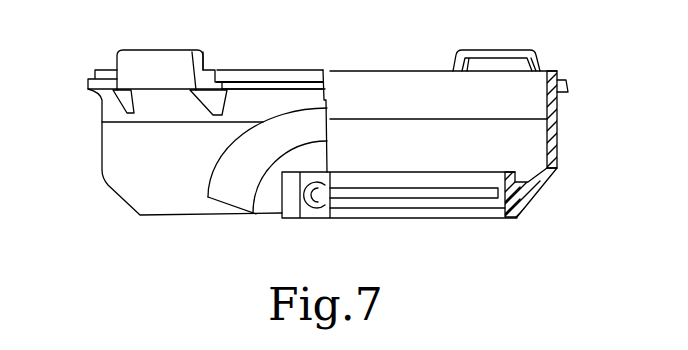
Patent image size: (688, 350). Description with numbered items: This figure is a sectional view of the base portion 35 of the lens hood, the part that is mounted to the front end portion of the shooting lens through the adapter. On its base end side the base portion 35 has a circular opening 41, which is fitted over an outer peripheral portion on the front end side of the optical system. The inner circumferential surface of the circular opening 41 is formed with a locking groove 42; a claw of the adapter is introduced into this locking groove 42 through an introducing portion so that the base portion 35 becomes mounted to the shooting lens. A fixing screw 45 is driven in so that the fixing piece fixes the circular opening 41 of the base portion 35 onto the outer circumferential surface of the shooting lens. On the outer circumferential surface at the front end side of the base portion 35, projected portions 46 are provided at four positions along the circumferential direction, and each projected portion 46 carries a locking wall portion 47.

The base portion 35 is at (128, 157).
The circular opening 41 is at (368, 212).
The locking groove 42 is at (488, 200).
The fixing screw 45 is at (317, 203).
The projected portion 46 is at (170, 60).
The locking wall portion 47 is at (477, 52).